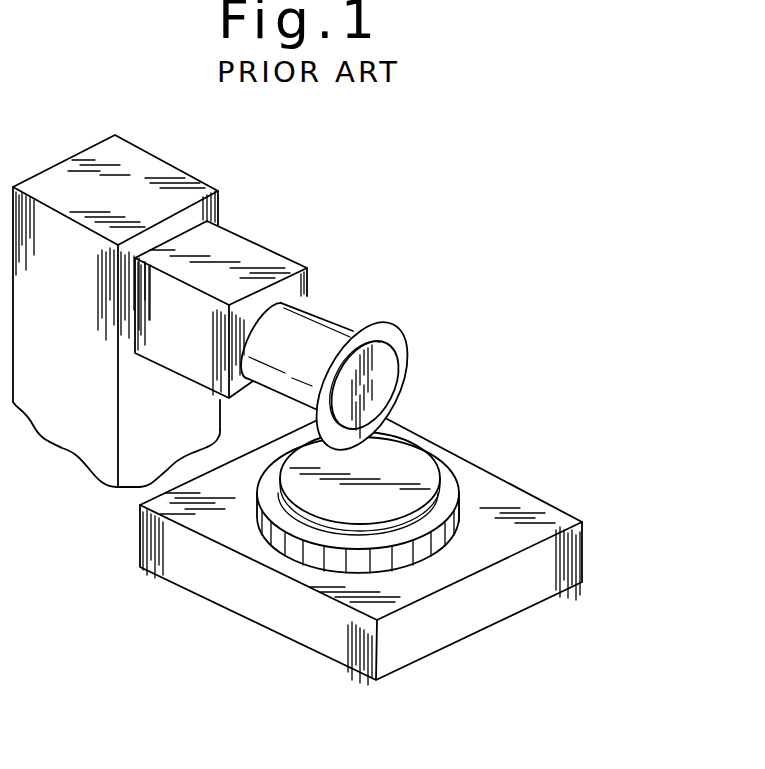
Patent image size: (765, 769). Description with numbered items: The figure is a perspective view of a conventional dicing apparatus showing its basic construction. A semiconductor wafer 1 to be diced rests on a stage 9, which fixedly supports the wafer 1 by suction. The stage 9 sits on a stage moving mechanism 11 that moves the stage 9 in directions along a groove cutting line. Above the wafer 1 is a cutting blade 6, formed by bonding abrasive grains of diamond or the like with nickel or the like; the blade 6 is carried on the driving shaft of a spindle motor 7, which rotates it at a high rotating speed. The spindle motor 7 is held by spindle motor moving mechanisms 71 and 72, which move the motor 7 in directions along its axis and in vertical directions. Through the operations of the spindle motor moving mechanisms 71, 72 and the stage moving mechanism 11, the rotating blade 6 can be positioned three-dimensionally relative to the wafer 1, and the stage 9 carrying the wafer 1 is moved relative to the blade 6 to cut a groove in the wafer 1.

The spindle motor moving mechanism 72 is at (167, 160).
The spindle motor moving mechanism 71 is at (258, 253).
The spindle motor 7 is at (327, 313).
The cutting blade 6 is at (395, 333).
The semiconductor wafer 1 is at (437, 448).
The stage 9 is at (456, 513).
The stage moving mechanism 11 is at (582, 553).